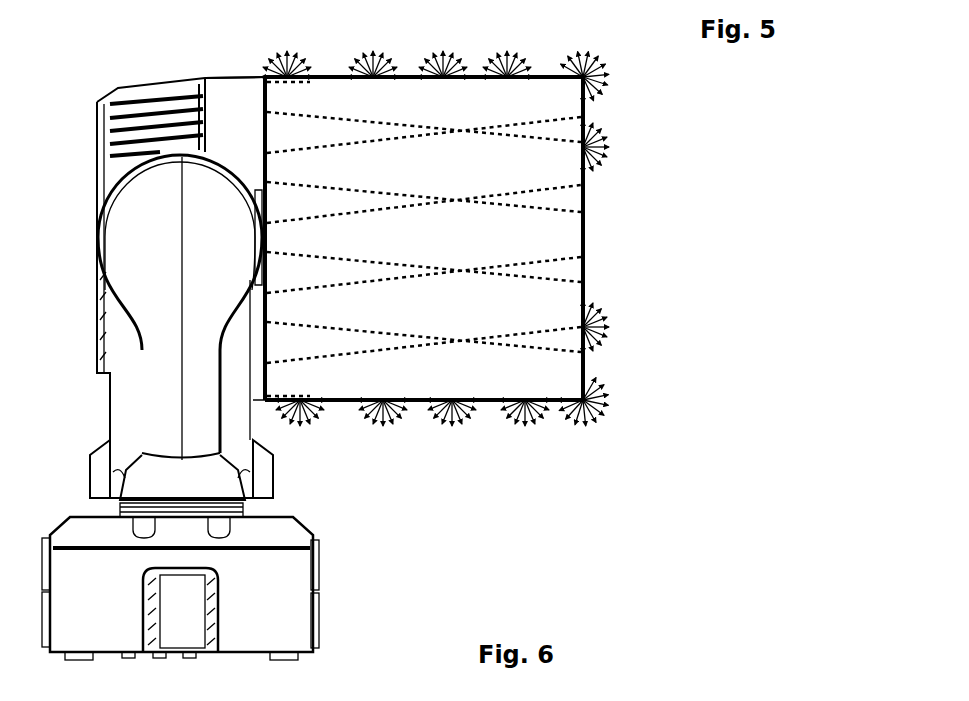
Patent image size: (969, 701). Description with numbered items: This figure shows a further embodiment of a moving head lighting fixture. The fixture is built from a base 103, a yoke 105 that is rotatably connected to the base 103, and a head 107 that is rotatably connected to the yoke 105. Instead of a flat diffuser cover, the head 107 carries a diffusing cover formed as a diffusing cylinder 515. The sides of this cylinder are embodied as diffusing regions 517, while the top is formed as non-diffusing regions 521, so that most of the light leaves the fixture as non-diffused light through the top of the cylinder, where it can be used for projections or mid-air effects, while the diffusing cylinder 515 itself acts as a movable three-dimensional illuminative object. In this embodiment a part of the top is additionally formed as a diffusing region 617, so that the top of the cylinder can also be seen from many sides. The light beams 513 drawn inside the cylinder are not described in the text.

The base 103 is at (350, 595).
The yoke 105 is at (275, 449).
The head 107 is at (145, 55).
The light beams 513 is at (583, 185).
The diffusing cylinder 515 is at (245, 0).
The diffusing regions 517 is at (533, 75).
The non-diffusing regions 521 is at (583, 257).
The diffusing region 617 is at (583, 117).